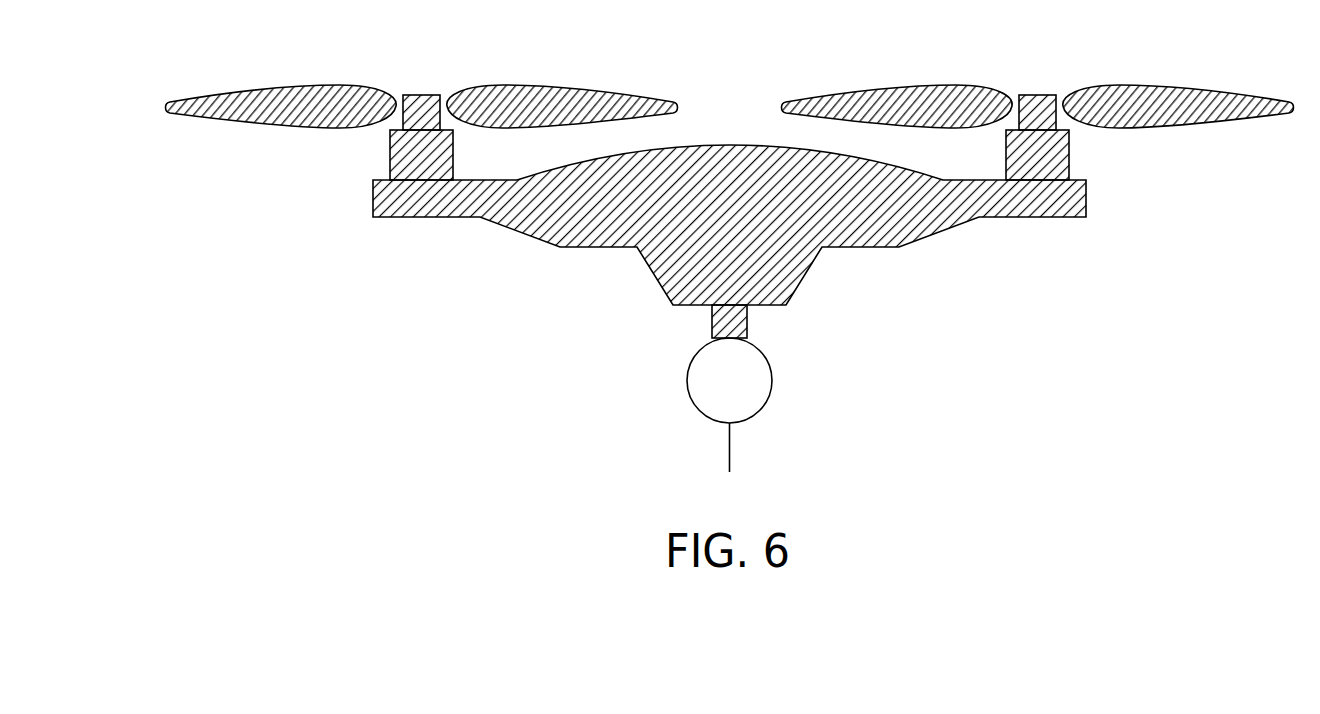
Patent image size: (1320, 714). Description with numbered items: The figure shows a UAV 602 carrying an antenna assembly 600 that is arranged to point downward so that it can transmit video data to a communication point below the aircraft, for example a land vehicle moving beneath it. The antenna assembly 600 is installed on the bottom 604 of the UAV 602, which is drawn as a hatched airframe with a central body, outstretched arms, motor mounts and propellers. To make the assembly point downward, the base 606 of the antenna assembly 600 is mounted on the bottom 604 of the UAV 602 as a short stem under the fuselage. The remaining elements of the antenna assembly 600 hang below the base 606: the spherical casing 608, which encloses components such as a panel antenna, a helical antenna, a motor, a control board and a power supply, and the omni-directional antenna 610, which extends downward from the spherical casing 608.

The antenna assembly 600 is at (730, 272).
The UAV 602 is at (730, 144).
The bottom 604 is at (745, 388).
The base 606 is at (712, 318).
The spherical casing 608 is at (772, 382).
The omni-directional antenna 610 is at (730, 448).